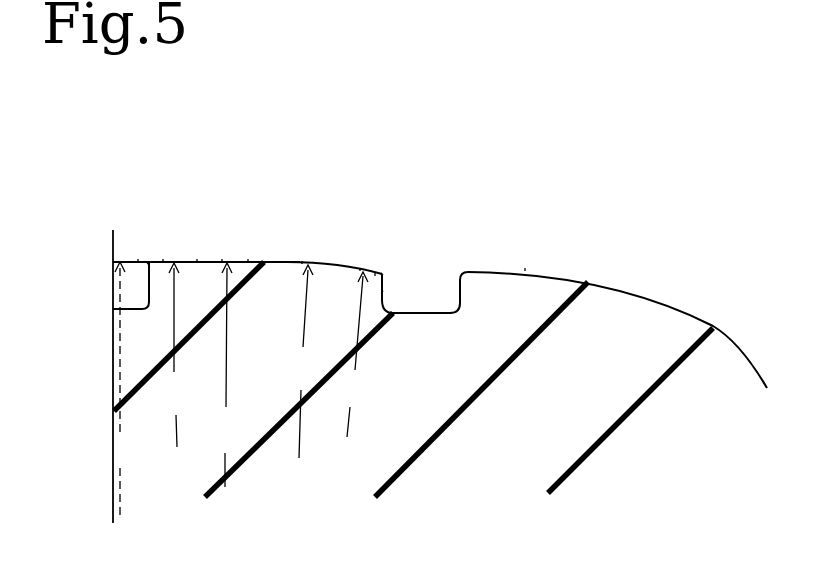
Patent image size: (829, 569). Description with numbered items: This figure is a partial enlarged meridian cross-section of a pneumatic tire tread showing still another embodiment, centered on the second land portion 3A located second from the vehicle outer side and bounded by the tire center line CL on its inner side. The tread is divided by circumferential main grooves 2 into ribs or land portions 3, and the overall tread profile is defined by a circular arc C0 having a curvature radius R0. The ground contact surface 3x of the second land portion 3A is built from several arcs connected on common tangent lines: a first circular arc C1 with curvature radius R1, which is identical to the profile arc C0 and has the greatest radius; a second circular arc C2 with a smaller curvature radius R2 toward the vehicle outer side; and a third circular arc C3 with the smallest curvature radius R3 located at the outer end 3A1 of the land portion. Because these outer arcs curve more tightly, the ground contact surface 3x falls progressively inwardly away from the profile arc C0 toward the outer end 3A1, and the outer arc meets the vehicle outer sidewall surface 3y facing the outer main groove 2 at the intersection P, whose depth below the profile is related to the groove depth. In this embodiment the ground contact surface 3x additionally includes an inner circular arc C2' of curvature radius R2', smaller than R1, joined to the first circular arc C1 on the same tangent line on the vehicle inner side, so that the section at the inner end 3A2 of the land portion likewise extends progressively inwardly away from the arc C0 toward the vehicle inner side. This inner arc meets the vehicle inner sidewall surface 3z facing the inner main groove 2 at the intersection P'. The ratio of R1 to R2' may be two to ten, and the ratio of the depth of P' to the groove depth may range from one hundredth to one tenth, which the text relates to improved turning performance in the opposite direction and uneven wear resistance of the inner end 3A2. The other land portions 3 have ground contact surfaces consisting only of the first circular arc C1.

The main groove 2 is at (437, 302).
The land portion 3 is at (573, 274).
The second land portion 3A is at (283, 259).
The outer end of the land portion 3A1 is at (375, 275).
The inner end of the land portion 3A2 is at (163, 261).
The ground contact surface 3x is at (222, 261).
The vehicle outer sidewall surface 3y is at (385, 287).
The vehicle inner sidewall surface 3z is at (147, 296).
The intersection P is at (423, 232).
The intersection P' is at (89, 296).
The tire center line CL is at (107, 361).
The circular arc C0 is at (138, 260).
The first circular arc C1 is at (248, 261).
The second circular arc C2 is at (320, 193).
The inner circular arc C2' is at (195, 188).
The third circular arc C3 is at (360, 270).
The curvature radius R0 is at (133, 388).
The curvature radius R1 is at (222, 375).
The curvature radius R2 is at (297, 361).
The curvature radius R2' is at (176, 355).
The curvature radius R3 is at (357, 354).